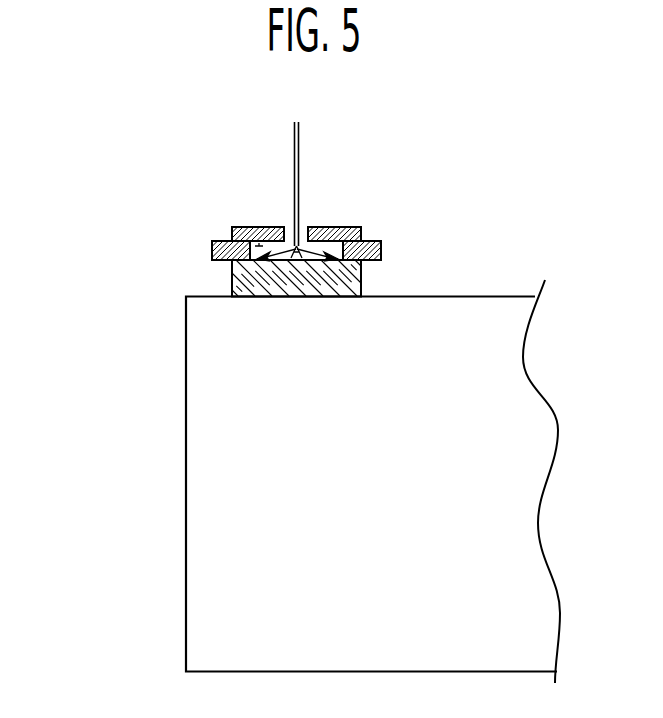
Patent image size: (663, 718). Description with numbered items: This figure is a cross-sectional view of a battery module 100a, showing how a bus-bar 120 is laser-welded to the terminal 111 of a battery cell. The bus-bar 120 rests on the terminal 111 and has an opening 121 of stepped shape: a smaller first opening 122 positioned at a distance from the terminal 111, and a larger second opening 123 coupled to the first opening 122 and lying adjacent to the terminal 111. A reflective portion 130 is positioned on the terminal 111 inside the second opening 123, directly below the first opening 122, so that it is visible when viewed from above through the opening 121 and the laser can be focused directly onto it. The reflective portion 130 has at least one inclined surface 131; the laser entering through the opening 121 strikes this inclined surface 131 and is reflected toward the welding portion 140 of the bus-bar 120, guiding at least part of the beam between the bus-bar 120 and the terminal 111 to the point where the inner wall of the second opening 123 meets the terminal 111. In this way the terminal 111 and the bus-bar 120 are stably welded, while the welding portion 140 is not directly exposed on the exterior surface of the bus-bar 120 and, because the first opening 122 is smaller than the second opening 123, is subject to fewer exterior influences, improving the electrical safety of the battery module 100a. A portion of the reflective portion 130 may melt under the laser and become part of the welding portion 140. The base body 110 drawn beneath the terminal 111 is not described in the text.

The battery module 100a is at (90, 150).
The base member 110 is at (176, 435).
The terminal 111 is at (232, 278).
The bus-bar 120 is at (298, 177).
The opening 121 is at (265, 174).
The first opening 122 is at (284, 227).
The second opening 123 is at (232, 202).
The reflective portion 130 is at (300, 262).
The inclined surface 131 is at (317, 262).
The welding portion 140 is at (212, 255).